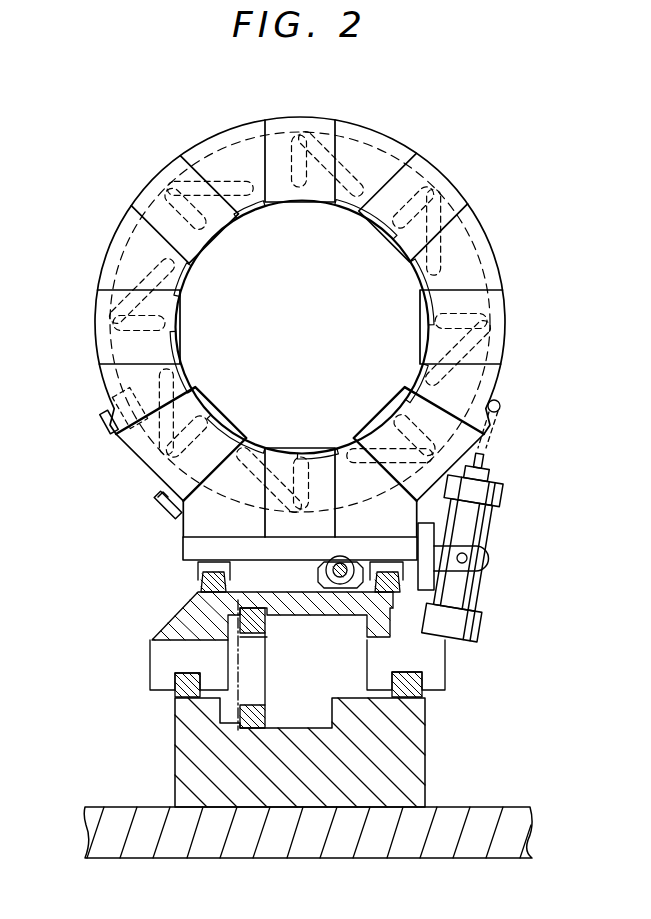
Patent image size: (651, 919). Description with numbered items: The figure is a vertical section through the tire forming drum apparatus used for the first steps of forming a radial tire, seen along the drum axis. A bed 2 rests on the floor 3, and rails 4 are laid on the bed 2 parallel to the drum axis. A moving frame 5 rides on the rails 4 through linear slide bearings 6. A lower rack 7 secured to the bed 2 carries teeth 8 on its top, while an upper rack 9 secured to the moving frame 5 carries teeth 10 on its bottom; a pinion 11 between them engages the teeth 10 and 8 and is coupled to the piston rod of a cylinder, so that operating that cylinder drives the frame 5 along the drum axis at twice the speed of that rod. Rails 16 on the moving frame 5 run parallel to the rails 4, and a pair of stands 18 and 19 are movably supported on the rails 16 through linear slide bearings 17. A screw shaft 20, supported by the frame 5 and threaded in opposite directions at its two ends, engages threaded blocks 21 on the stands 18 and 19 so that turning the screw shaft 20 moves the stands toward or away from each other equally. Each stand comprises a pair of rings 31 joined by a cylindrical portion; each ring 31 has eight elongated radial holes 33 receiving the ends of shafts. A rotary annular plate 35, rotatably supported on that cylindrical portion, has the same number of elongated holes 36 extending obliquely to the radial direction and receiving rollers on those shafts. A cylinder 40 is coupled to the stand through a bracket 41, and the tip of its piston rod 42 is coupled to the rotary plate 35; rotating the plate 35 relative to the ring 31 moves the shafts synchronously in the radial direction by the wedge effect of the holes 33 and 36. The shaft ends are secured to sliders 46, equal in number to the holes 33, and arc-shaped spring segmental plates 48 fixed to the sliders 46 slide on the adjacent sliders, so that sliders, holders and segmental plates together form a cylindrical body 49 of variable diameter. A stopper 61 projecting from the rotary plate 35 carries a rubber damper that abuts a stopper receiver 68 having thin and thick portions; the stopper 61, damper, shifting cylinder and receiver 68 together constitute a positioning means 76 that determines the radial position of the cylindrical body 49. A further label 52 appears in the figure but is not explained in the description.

The bed 2 is at (418, 753).
The floor 3 is at (473, 817).
The rails 4 is at (177, 698).
The moving frame 5 is at (172, 625).
The linear slide bearings 6 is at (152, 661).
The lower rack 7 is at (265, 715).
The teeth 8 is at (252, 705).
The upper rack 9 is at (267, 622).
The teeth 10 is at (265, 642).
The pinion 11 is at (258, 668).
The rails 16 is at (203, 585).
The linear slide bearings 17 is at (198, 565).
The stand 18 is at (512, 506).
The stand 19 is at (463, 555).
The screw shaft 20 is at (347, 567).
The threaded blocks 21 is at (320, 572).
The ring 31 is at (397, 150).
The radial holes 33 is at (299, 187).
The rotary annular plate 35 is at (358, 140).
The holes 36 is at (340, 170).
The cylinder 40 is at (487, 538).
The bracket 41 is at (480, 613).
The piston rod 42 is at (511, 455).
The sliders 46 is at (450, 197).
The segmental plates 48 is at (185, 347).
The cylindrical body 49 is at (230, 418).
The direction arrow 52 is at (493, 584).
The stopper 61 is at (105, 425).
The stopper receiver 68 is at (158, 493).
The positioning means 76 is at (127, 459).